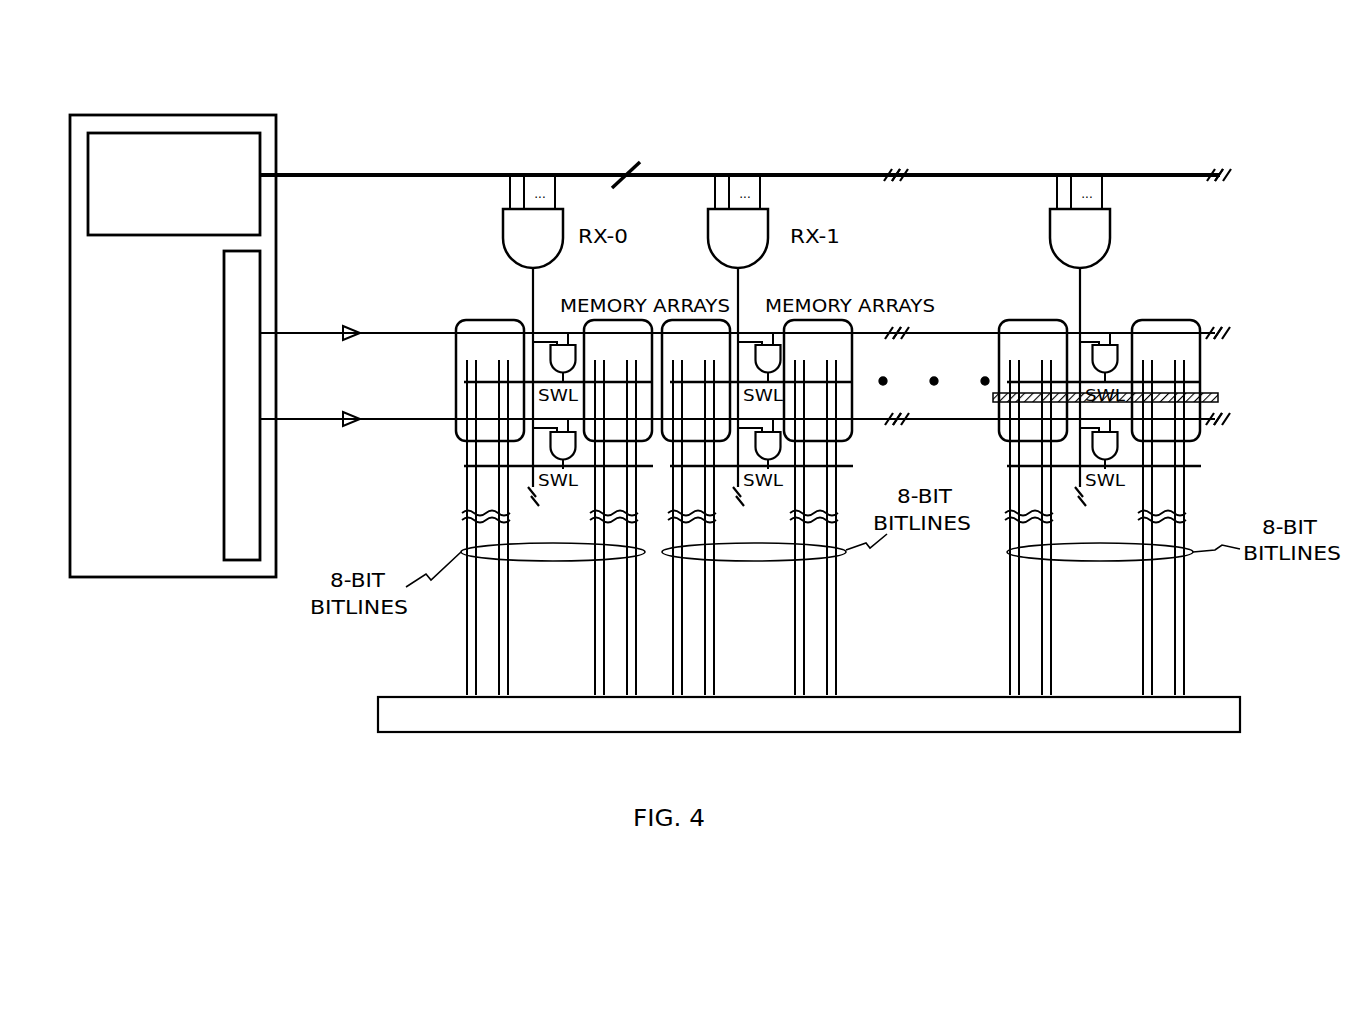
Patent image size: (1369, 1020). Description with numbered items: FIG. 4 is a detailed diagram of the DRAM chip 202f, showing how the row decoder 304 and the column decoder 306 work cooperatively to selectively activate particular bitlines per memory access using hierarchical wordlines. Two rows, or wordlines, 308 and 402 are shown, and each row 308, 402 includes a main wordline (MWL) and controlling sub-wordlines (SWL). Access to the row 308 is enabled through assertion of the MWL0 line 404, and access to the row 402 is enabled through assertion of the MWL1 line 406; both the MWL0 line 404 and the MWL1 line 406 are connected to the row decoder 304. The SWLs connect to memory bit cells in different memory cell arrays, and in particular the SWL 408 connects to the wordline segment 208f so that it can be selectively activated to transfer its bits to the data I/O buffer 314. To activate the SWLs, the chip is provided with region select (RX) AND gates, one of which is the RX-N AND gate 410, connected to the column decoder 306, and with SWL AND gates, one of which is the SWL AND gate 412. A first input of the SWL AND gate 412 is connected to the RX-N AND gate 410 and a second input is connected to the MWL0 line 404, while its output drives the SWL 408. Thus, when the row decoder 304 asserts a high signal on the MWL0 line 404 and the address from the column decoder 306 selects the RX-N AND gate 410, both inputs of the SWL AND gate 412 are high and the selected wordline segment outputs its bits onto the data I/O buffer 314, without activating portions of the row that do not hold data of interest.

The DRAM chip 202f is at (232, 676).
The row decoder 304 is at (224, 410).
The column decoder 306 is at (168, 236).
The row 308 is at (1240, 333).
The row 402 is at (1240, 419).
The MWL0 line 404 is at (405, 333).
The MWL1 line 406 is at (440, 420).
The SWL 408 is at (1125, 383).
The RX-N AND gate 410 is at (1063, 236).
The SWL AND gate 412 is at (1103, 352).
The wordline segment 208f is at (1220, 397).
The data I/O buffer 314 is at (378, 714).